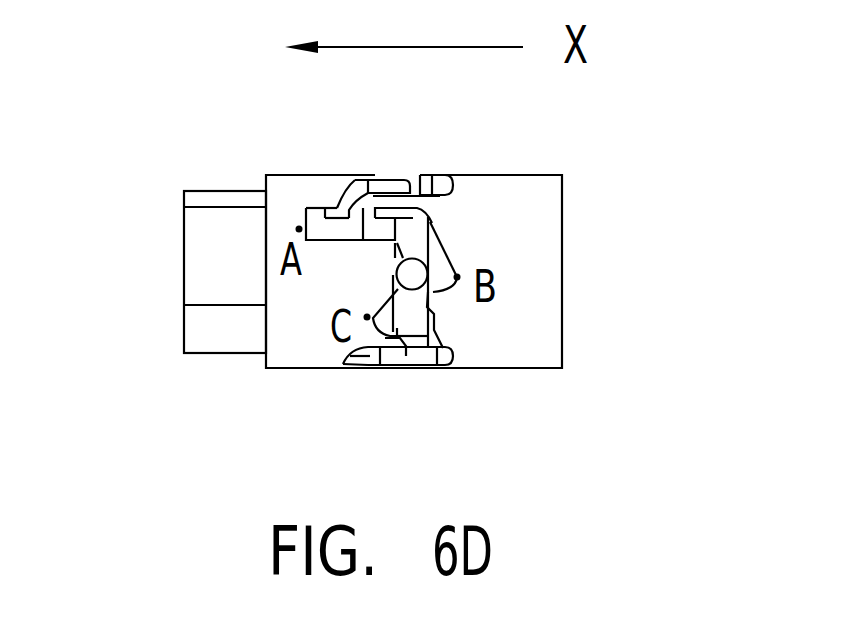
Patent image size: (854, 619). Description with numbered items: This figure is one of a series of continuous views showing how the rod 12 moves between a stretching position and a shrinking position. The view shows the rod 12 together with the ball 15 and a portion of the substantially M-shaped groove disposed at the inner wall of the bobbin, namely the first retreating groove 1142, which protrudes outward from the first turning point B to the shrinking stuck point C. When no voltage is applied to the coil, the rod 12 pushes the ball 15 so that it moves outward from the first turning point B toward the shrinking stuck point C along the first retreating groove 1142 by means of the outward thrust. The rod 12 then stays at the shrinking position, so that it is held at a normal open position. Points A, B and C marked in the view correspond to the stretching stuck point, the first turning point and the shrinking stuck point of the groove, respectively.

The rod 12 is at (220, 289).
The ball 15 is at (412, 275).
The first retreating groove 1142 is at (388, 307).